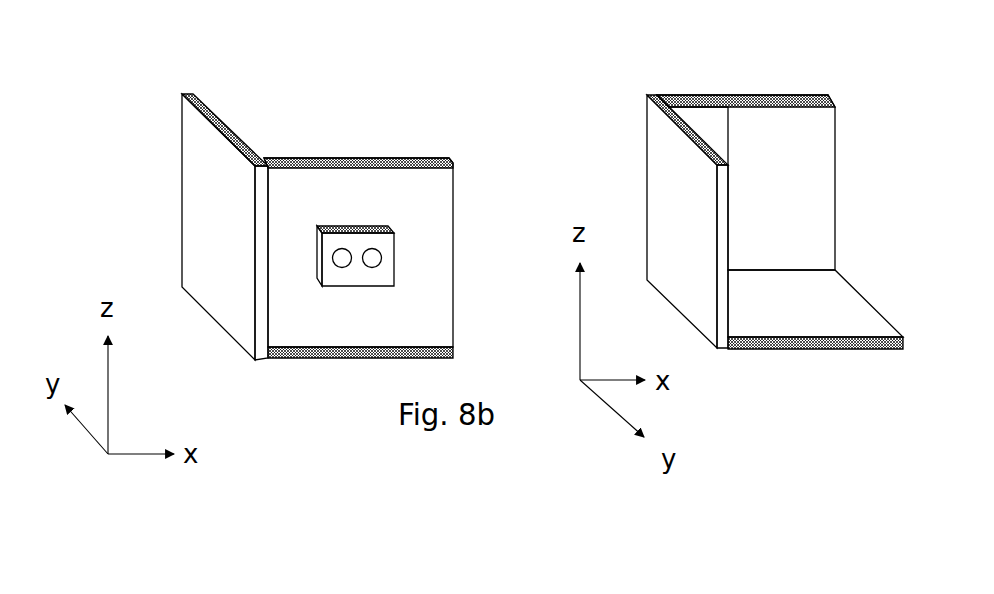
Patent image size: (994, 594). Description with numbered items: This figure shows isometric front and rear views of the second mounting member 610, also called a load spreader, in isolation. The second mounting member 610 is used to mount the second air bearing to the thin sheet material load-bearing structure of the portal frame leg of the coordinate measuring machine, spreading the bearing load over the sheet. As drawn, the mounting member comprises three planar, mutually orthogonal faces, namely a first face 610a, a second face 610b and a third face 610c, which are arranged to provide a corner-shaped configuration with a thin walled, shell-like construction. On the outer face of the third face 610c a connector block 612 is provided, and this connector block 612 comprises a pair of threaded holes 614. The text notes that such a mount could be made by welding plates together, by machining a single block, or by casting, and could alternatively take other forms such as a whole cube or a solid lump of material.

The second mounting member/load spreader 610 is at (160, 142).
The first face 610a is at (333, 360).
The second face 610b is at (250, 235).
The third face 610c is at (383, 211).
The connector block 612 is at (395, 259).
The threaded holes 614 is at (352, 262).